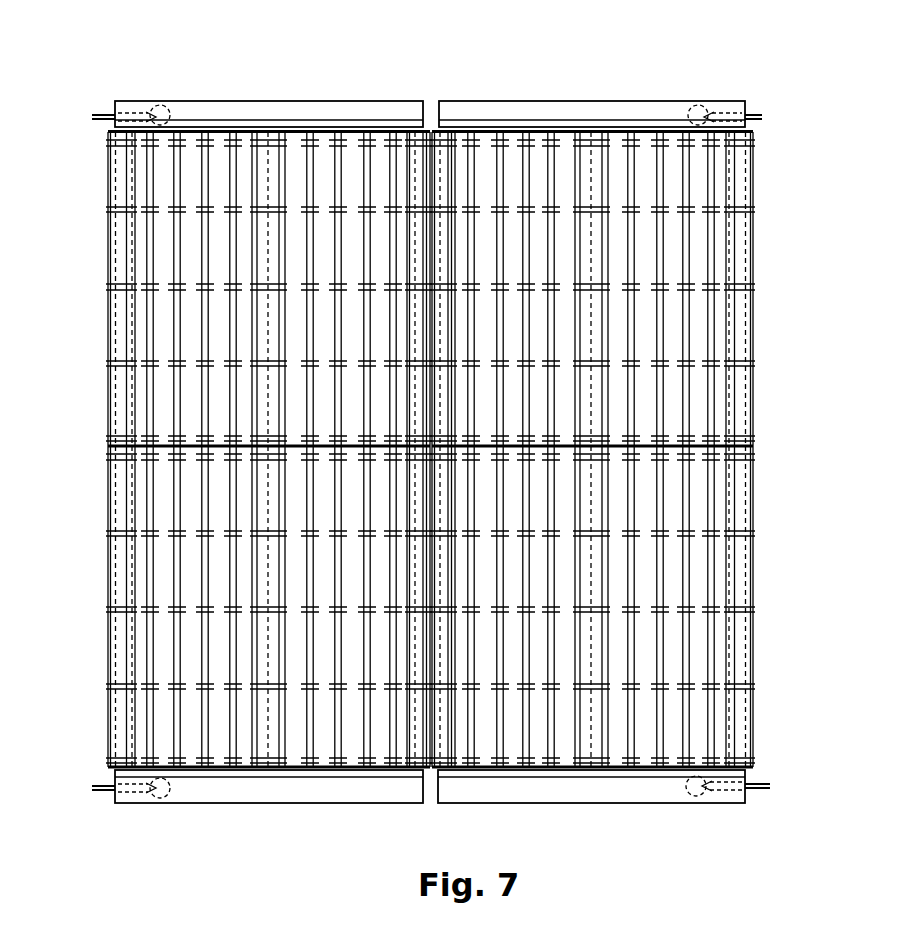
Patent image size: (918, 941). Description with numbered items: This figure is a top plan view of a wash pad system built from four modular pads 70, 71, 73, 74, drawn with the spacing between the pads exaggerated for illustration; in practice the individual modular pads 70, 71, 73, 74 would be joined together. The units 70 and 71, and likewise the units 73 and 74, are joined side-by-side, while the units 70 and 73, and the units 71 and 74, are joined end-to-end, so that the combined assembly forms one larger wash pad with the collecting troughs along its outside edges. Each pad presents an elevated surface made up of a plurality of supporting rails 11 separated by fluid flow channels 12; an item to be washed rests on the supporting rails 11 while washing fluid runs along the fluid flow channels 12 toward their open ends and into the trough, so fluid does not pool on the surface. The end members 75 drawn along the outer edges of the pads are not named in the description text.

The rail / cross bar with pivot pin 75 is at (460, 101).
The grate bar 11 is at (540, 147).
The spacer / tie member 12 is at (633, 147).
The upper left grate panel 74 is at (107, 397).
The lower left grate panel 73 is at (107, 718).
The upper right grate panel 71 is at (634, 233).
The lower right grate panel 70 is at (753, 636).